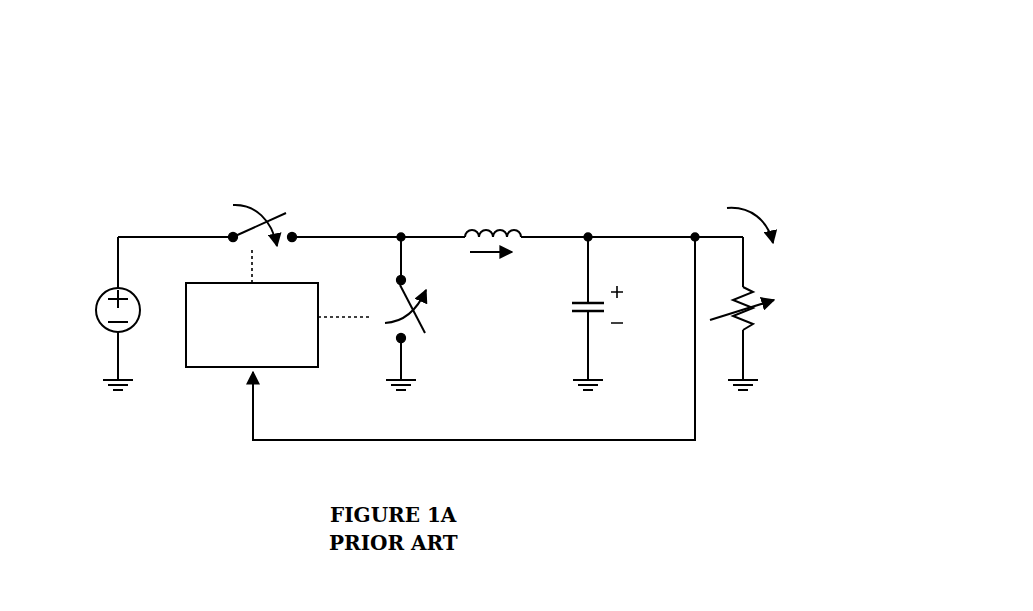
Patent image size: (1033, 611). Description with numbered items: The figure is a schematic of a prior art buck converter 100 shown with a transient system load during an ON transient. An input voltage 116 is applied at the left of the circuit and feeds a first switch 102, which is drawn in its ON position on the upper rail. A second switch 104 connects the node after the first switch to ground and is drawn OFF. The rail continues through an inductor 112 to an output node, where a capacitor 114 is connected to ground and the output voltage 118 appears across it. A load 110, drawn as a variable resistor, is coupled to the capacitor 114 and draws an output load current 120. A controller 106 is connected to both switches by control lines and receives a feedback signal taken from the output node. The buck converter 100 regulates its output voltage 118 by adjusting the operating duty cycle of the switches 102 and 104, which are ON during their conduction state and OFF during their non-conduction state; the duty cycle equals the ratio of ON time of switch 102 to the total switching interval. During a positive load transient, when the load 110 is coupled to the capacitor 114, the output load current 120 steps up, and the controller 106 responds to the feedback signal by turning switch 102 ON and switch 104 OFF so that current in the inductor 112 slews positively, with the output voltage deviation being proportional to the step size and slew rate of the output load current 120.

The buck converter 100 is at (559, 146).
The switch 102 is at (274, 218).
The switch 104 is at (427, 333).
The controller 106 is at (240, 368).
The load 110 is at (744, 333).
The inductor 112 is at (473, 225).
The capacitor 114 is at (582, 311).
The input voltage 116 is at (62, 301).
The output voltage 118 is at (655, 323).
The output load current 120 is at (740, 201).